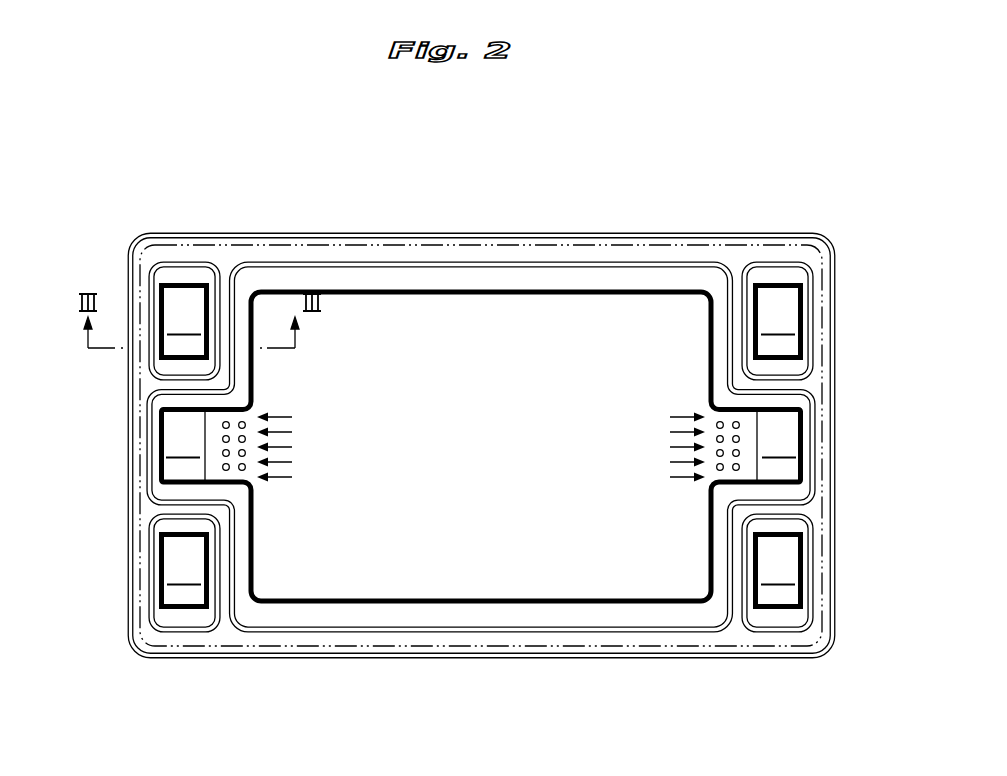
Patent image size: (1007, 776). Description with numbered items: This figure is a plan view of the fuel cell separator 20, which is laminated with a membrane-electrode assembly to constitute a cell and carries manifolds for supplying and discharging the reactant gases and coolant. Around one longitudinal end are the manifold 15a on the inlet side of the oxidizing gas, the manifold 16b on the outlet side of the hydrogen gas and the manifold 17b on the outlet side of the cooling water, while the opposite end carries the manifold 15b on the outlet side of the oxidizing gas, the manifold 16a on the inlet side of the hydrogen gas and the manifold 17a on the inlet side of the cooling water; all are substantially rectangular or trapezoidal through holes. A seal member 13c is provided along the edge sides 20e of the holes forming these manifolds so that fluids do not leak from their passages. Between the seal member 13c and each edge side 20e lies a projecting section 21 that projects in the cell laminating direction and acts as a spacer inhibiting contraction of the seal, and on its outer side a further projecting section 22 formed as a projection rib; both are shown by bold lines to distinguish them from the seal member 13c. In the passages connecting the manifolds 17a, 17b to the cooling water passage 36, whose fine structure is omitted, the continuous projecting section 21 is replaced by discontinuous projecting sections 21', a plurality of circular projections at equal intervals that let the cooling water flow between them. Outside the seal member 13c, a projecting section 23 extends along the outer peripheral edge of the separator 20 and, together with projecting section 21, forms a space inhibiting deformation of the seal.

The seal member 13c is at (178, 263).
The projecting section 23 is at (323, 245).
The separator 20 is at (395, 655).
The edge side 20e is at (192, 289).
The projecting section 21 is at (478, 464).
The discontinuous projecting sections 21' is at (481, 493).
The projecting section 22 is at (435, 293).
The cooling water passage 36 is at (437, 450).
The manifold 16b is at (184, 322).
The manifold 15b is at (778, 322).
The manifold 15a is at (184, 571).
The manifold 16a is at (778, 571).
The manifold 17b is at (184, 446).
The manifold 17a is at (778, 446).